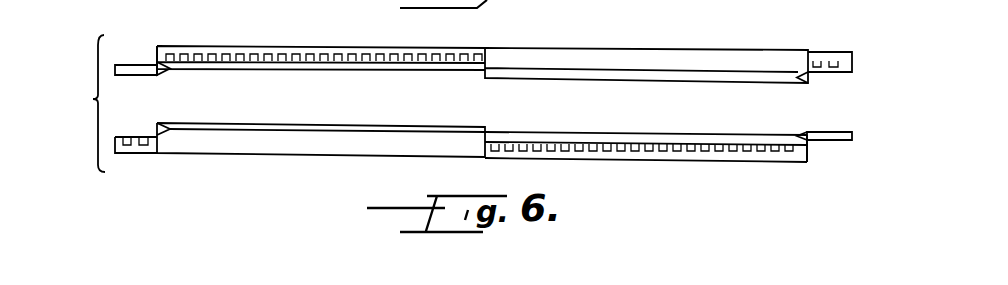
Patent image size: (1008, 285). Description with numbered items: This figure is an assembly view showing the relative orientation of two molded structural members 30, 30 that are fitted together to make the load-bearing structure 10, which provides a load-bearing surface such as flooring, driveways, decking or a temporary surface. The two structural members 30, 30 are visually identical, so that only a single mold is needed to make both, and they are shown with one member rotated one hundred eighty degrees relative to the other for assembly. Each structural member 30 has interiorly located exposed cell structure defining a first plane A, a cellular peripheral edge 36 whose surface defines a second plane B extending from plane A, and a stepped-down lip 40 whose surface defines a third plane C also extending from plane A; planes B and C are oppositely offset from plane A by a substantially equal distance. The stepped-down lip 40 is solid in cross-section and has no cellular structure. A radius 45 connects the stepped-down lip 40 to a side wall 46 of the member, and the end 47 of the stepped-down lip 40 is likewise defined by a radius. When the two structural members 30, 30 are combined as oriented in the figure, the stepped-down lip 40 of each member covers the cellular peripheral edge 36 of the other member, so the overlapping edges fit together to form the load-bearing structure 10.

The load-bearing structure 10 is at (76, 103).
The molded structural member 30 is at (722, 42).
The peripheral edge 36 is at (843, 52).
The stepped-down lip 40 is at (125, 65).
The radius 45 is at (155, 65).
The side wall 46 is at (157, 63).
The end of the stepped-down lip 47 is at (116, 73).
The first plane A is at (332, 76).
The second plane B is at (260, 72).
The third plane C is at (545, 80).